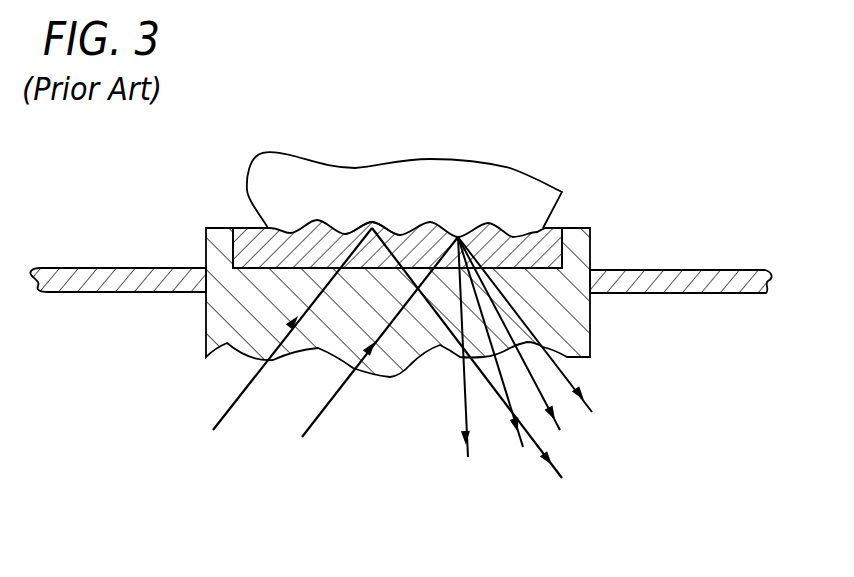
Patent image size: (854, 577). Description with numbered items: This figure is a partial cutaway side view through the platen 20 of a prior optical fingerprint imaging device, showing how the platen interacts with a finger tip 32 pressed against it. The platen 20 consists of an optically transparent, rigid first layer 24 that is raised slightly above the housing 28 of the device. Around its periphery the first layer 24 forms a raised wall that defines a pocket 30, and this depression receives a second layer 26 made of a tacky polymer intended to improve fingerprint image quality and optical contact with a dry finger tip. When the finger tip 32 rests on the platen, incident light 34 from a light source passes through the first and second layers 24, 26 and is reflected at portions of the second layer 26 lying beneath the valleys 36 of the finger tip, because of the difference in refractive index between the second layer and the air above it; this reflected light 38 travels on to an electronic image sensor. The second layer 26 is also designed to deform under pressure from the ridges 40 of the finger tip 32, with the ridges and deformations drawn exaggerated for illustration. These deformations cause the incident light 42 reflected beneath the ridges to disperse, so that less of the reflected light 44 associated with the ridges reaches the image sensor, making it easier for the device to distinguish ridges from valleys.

The platen 20 is at (572, 192).
The first layer 24 is at (560, 318).
The second layer 26 is at (542, 228).
The housing 28 is at (133, 266).
The pocket 30 is at (235, 247).
The finger tip 32 is at (290, 183).
The incident light 34 is at (250, 387).
The valleys 36 is at (370, 228).
The reflected light 38 is at (537, 440).
The ridges 40 is at (460, 245).
The incident light 42 is at (333, 398).
The reflected light 44 is at (640, 393).